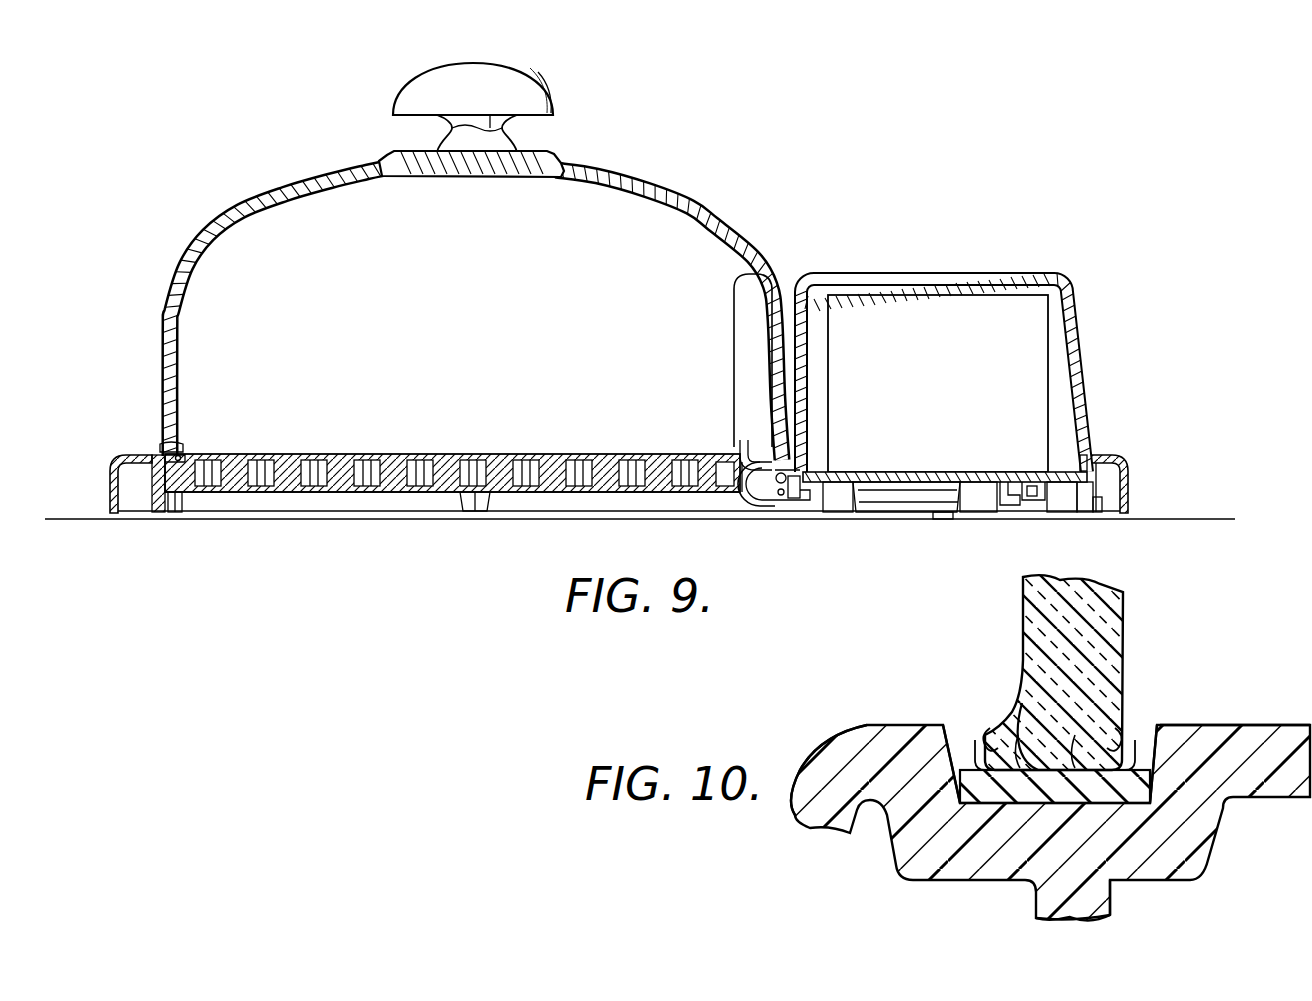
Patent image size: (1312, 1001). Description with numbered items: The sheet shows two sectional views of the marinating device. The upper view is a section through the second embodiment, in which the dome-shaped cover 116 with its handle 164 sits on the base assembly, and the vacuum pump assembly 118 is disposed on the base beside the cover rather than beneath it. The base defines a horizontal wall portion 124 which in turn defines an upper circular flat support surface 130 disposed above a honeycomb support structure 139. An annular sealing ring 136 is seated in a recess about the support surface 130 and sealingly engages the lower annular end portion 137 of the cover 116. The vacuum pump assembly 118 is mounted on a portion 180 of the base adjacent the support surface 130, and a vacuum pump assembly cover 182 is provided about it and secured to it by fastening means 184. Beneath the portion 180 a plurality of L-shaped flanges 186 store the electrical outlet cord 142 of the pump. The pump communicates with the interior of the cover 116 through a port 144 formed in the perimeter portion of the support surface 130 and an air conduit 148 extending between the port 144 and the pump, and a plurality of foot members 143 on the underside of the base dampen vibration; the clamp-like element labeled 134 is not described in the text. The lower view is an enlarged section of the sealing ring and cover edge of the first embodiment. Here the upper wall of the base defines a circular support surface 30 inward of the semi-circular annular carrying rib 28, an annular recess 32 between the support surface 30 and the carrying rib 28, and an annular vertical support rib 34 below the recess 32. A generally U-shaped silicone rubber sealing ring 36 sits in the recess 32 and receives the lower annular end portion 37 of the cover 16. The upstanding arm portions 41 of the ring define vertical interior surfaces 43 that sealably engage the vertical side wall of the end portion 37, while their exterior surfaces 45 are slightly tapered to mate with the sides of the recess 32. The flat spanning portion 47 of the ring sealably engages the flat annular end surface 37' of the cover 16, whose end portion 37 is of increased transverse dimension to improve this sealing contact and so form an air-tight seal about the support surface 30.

In FIG. 9, the handle 164 is at (548, 88).
In FIG. 9, the cover 116 is at (640, 178).
In FIG. 9, the vacuum pump assembly 118 is at (1060, 340).
In FIG. 9, the vacuum pump assembly cover 182 is at (1057, 276).
In FIG. 9, the fastening means 184 is at (1092, 462).
In FIG. 9, the support surface 130 is at (533, 452).
In FIG. 9, the honeycomb support structure 139 is at (313, 480).
In FIG. 9, the horizontal wall portion 124 is at (553, 494).
In FIG. 9, the foot members 143 is at (165, 515).
In FIG. 9, the lower annular end portion 137 is at (176, 446).
In FIG. 9, the sealing ring 136 is at (188, 448).
In FIG. 9, the port 144 is at (737, 438).
In FIG. 9, the air conduit 148 is at (753, 493).
In FIG. 9, the clamp 134 is at (763, 493).
In FIG. 9, the electrical outlet cord 142 is at (898, 493).
In FIG. 9, the L-shaped flanges 186 is at (1022, 507).
In FIG. 9, the portion of base assembly 180 is at (1088, 487).
In FIG. 10, the cover 16 is at (1021, 612).
In FIG. 10, the flat annular end surface 37' is at (974, 694).
In FIG. 10, the flat spanning portion 47 is at (1037, 768).
In FIG. 10, the lower annular end portion 37 is at (1136, 702).
In FIG. 10, the sealing ring 36 is at (1112, 743).
In FIG. 10, the support surface 30 is at (1267, 724).
In FIG. 10, the exterior surfaces 45 is at (943, 765).
In FIG. 10, the upstanding arm portions 41 is at (962, 748).
In FIG. 10, the vertical interior surfaces 43 is at (998, 732).
In FIG. 10, the carrying rib 28 is at (820, 742).
In FIG. 10, the annular recess 32 is at (1133, 803).
In FIG. 10, the annular vertical support rib 34 is at (1117, 903).